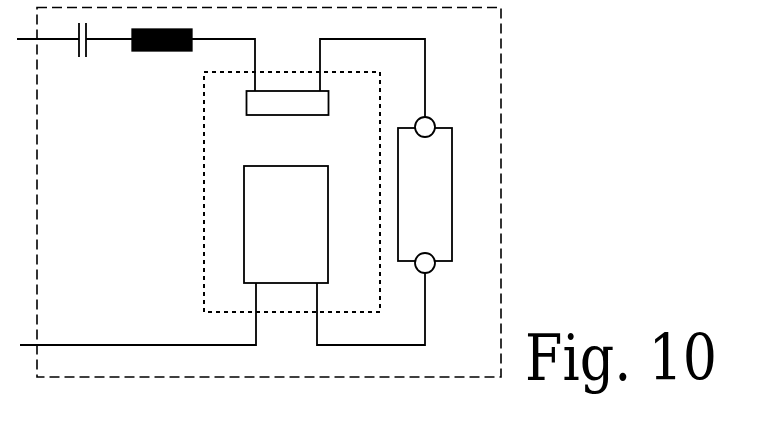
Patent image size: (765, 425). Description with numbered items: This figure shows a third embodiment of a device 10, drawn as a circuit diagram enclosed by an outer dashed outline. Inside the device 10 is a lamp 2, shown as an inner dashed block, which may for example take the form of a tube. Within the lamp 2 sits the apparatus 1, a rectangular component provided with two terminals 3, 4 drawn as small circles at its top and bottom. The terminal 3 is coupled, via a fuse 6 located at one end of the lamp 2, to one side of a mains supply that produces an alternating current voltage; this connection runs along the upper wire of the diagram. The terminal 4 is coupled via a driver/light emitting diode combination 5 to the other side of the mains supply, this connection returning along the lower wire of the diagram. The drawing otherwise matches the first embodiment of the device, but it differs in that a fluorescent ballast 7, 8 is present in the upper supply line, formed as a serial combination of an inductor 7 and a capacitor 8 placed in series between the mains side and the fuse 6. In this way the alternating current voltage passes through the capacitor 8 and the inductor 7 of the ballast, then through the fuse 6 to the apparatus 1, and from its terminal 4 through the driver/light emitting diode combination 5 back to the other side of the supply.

The apparatus 1 is at (435, 194).
The lamp 2 is at (204, 183).
The terminal 3 is at (434, 112).
The terminal 4 is at (435, 277).
The driver/light emitting diode combination 5 is at (297, 224).
The fuse 6 is at (299, 103).
The fluorescent ballast inductor 7 is at (162, 60).
The fluorescent ballast capacitor 8 is at (79, 60).
The device 10 is at (463, 377).